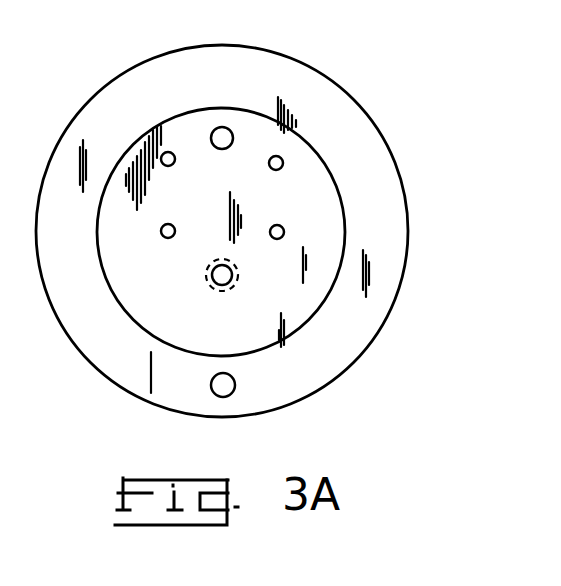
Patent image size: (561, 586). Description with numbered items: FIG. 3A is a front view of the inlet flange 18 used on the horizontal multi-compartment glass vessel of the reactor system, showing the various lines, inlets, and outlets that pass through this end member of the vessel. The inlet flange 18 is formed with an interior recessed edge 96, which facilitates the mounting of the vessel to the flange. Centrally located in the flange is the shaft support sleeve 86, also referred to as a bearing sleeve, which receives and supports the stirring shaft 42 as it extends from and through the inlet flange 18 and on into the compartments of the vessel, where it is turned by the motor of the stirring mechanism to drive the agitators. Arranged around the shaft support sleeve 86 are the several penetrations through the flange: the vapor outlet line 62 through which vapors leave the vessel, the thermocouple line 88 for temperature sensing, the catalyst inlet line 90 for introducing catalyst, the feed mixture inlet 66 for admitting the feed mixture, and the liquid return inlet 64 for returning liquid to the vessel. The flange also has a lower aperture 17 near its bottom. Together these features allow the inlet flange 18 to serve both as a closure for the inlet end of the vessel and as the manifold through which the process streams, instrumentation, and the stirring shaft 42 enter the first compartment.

The inlet flange 18 is at (365, 112).
The interior recessed edge 96 is at (333, 290).
The vapor outlet line 62 is at (232, 128).
The liquid return inlet 64 is at (281, 159).
The feed mixture inlet 66 is at (284, 236).
The catalyst inlet line 90 is at (168, 152).
The thermocouple line 88 is at (170, 238).
The shaft 42 is at (218, 289).
The shaft support sleeve 86 is at (236, 284).
The lower aperture 17 is at (235, 385).